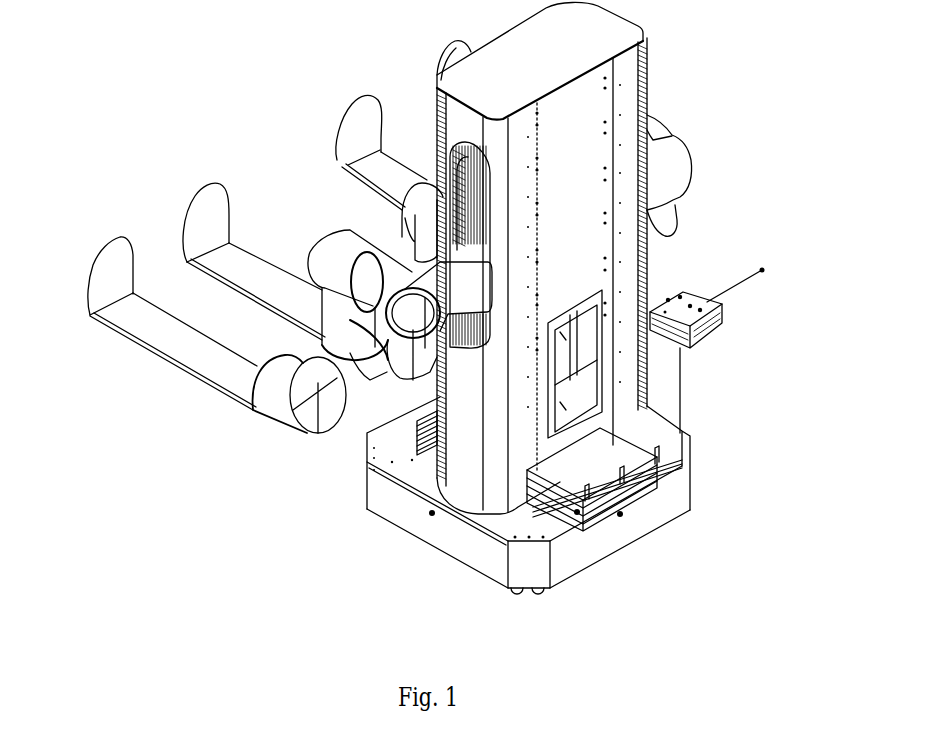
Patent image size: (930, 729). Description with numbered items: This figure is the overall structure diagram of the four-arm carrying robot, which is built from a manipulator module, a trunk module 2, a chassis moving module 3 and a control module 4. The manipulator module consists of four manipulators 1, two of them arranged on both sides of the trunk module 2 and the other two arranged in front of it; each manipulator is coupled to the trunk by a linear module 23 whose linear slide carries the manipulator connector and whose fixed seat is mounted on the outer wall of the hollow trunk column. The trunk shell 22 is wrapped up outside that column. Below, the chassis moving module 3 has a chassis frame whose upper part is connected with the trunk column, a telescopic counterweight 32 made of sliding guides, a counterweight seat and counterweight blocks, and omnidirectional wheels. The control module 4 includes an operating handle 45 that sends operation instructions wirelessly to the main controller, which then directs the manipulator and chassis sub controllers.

The manipulator 1 is at (433, 108).
The trunk module 2 is at (570, 227).
The chassis moving module 3 is at (407, 462).
The control module 4 is at (563, 337).
The trunk shell 22 is at (463, 460).
The linear module 23 is at (468, 208).
The telescopic counterweight 32 is at (587, 453).
The operating handle 45 is at (690, 300).